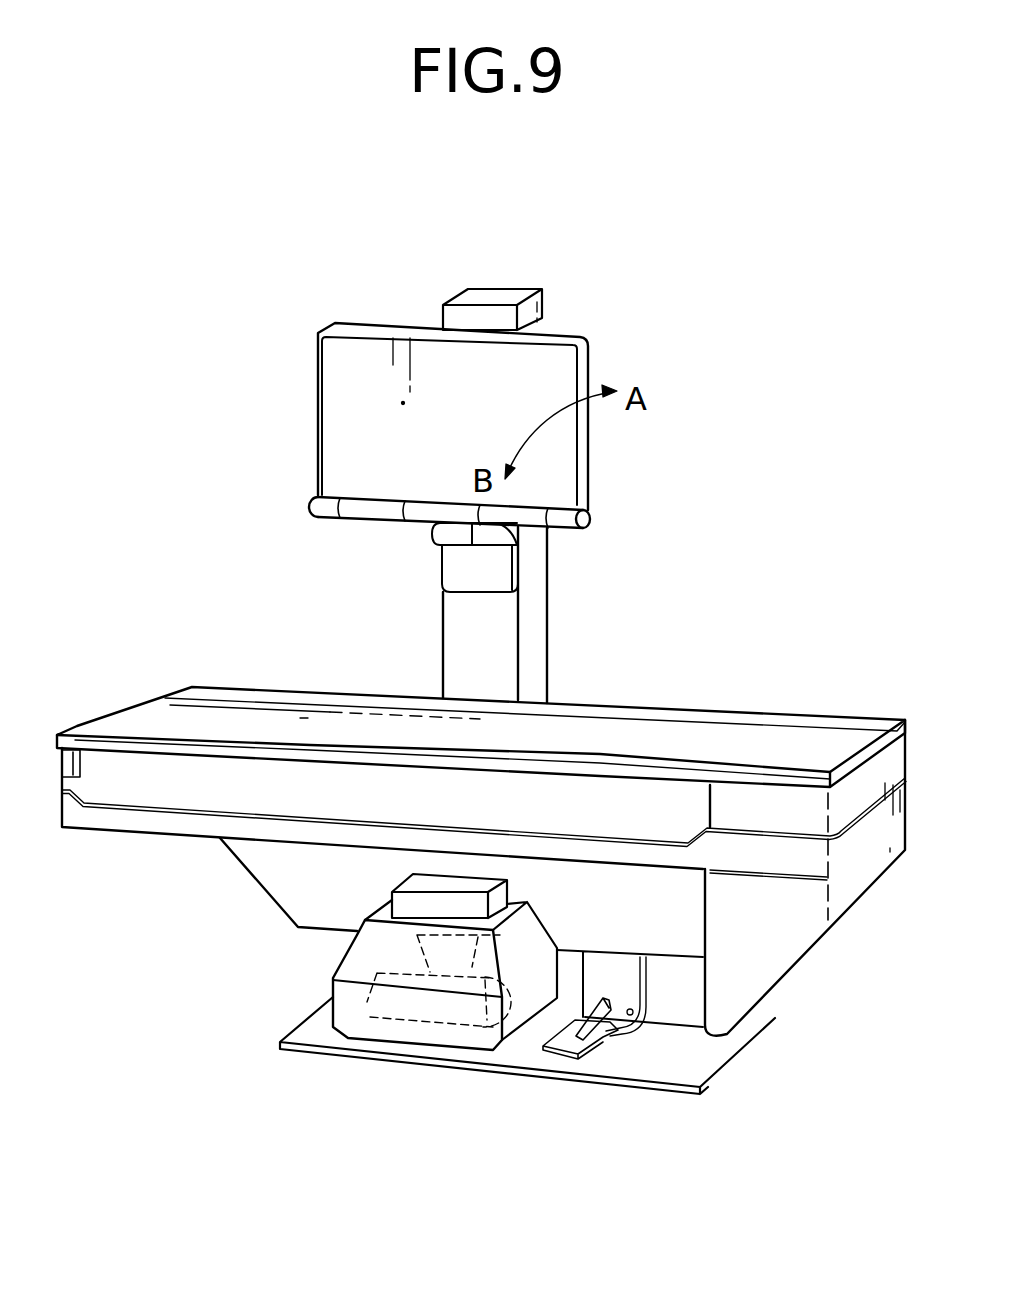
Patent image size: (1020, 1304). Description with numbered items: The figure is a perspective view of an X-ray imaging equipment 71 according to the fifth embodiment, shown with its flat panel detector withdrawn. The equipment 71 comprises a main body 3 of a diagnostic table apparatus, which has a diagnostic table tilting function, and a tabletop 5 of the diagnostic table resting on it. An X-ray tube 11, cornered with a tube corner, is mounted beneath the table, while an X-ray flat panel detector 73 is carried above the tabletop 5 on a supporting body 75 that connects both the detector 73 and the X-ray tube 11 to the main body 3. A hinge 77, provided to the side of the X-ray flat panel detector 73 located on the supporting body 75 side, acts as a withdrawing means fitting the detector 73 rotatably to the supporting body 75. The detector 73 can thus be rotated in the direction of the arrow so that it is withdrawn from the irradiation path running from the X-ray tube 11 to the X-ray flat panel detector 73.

The main body of diagnostic table apparatus 3 is at (263, 865).
The tabletop 5 is at (135, 717).
The X-ray tube 11 is at (350, 1050).
The X-ray imaging equipment 71 is at (760, 479).
The X-ray flat panel detector 73 is at (317, 363).
The supporting body 75 is at (545, 628).
The hinge 77 is at (330, 518).